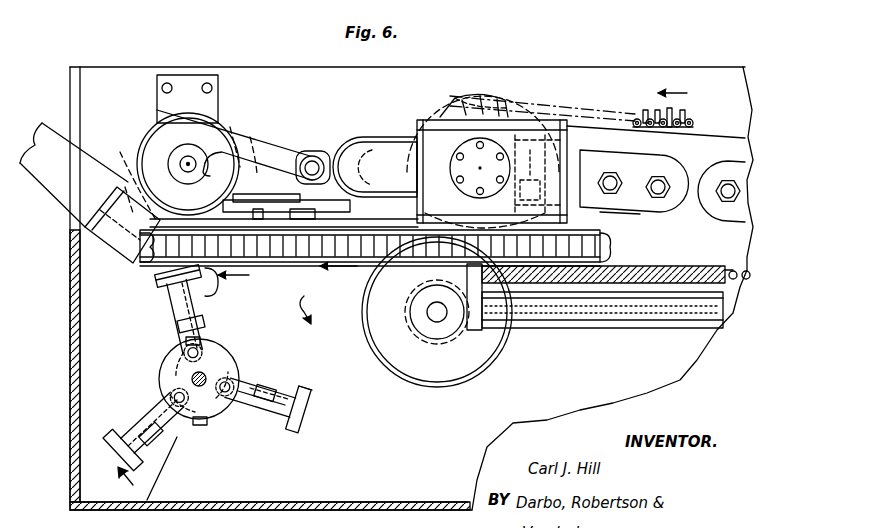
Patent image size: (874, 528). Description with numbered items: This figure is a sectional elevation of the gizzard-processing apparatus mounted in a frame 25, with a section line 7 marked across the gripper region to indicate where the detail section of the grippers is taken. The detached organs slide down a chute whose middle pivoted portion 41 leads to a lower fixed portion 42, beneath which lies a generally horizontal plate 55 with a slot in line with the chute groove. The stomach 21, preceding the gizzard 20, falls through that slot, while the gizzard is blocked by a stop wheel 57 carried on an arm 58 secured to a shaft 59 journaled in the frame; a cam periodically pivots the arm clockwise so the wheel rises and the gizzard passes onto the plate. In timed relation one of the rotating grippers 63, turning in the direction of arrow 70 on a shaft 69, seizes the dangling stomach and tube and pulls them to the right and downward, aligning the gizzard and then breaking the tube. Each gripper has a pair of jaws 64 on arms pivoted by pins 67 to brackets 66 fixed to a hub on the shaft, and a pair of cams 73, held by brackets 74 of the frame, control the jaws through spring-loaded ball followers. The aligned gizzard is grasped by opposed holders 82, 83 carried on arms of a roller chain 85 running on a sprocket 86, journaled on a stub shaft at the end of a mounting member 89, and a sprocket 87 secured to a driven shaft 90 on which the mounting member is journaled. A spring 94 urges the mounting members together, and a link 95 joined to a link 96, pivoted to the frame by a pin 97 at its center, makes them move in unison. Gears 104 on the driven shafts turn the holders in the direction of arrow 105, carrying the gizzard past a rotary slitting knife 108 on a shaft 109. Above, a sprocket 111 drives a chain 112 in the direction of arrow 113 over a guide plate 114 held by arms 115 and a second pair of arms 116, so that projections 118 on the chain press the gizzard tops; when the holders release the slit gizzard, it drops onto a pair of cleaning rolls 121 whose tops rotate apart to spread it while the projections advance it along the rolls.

The section line 7- 7 is at (188, 386).
The gizzard 20 is at (128, 179).
The stomach 21 is at (216, 290).
The frame 25 is at (103, 62).
The middle pivoted portion 41 is at (92, 187).
The lower fixed portion 42 is at (117, 243).
The horizontal plate 55 is at (153, 276).
The wheel 57 is at (175, 128).
The arm 58 is at (267, 143).
The shaft 59 is at (316, 161).
The grippers 63 is at (155, 297).
The jaws 64 is at (113, 433).
The brackets 66 is at (262, 385).
The pins 67 is at (275, 388).
The shaft 69 is at (206, 377).
The arrow 70 is at (313, 304).
The cams 73 is at (160, 371).
The brackets 74 is at (213, 338).
The holder 82 is at (160, 266).
The holder 83 is at (441, 258).
The roller chain 85 is at (307, 256).
The sprocket 86 is at (193, 256).
The sprocket 87 is at (551, 263).
The mounting member 89 is at (392, 220).
The driven shaft 90 is at (543, 128).
The spring 94 is at (280, 216).
The link 95 is at (340, 206).
The link 96 is at (346, 179).
The pin 97 is at (298, 153).
The gears 104 is at (612, 143).
The arrow 105 is at (340, 268).
The rotary slitting knife 108 is at (466, 370).
The shaft 109 is at (432, 320).
The sprocket 111 is at (470, 106).
The chain 112 is at (692, 122).
The arrow 113 is at (680, 93).
The guide plate 114 is at (694, 246).
The arms 115 is at (652, 168).
The arms 116 is at (732, 222).
The projections 118 is at (643, 112).
The cleaning rolls 121 is at (622, 290).